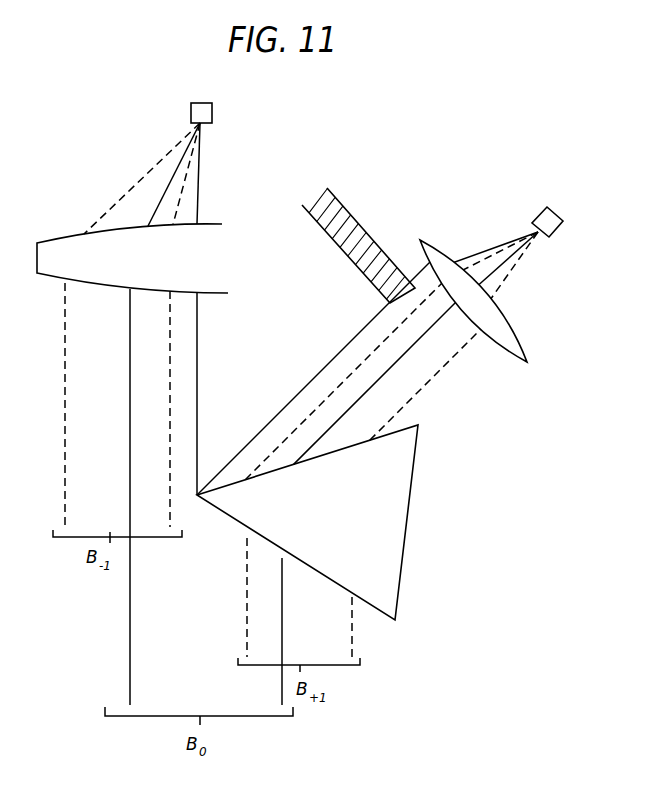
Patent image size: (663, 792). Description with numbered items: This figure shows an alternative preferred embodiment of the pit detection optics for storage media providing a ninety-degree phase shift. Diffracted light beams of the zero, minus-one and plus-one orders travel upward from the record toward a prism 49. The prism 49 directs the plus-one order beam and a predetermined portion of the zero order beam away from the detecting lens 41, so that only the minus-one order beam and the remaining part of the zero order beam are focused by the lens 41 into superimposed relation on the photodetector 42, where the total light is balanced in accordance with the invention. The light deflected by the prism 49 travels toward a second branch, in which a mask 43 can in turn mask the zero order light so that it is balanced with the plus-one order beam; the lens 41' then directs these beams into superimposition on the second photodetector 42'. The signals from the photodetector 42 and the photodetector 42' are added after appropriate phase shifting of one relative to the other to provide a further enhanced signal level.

The detecting lens 41 is at (125, 247).
The photodetector 42 is at (222, 116).
The mask 43 is at (363, 236).
The lens 41' is at (492, 301).
The photodetector 42' is at (565, 215).
The prism 49 is at (405, 529).